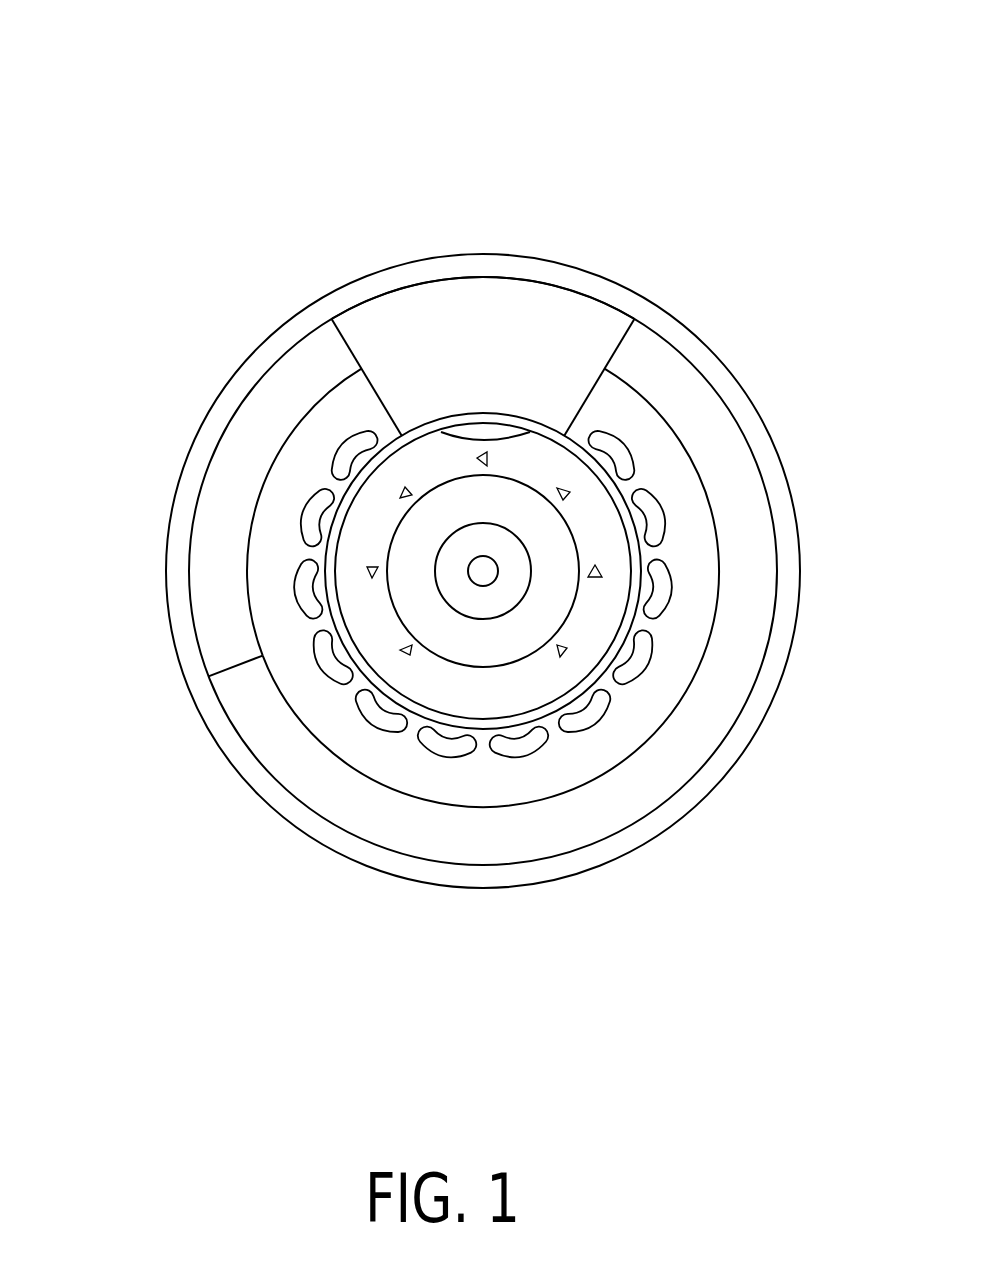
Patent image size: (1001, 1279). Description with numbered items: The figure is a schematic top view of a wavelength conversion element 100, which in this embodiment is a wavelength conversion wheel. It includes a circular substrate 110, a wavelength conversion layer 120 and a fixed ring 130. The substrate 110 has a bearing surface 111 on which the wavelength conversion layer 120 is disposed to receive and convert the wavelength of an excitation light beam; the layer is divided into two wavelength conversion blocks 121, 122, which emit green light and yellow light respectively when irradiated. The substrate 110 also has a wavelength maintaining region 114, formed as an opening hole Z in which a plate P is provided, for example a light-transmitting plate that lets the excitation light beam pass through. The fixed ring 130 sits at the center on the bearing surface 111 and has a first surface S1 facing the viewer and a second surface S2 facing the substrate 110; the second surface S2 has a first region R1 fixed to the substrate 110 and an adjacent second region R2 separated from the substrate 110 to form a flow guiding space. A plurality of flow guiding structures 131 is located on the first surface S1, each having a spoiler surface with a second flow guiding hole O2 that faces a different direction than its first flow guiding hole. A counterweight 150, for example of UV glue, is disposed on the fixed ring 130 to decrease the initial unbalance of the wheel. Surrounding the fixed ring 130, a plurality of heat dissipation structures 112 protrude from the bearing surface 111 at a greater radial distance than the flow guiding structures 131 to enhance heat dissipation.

The wavelength conversion element 100 is at (154, 34).
The substrate 110 is at (720, 357).
The bearing surface 111 is at (305, 478).
The heat dissipation structures 112 is at (350, 453).
The wavelength maintaining region 114 is at (483, 263).
The wavelength conversion layer 120 is at (777, 527).
The wavelength conversion block 121 is at (218, 639).
The wavelength conversion block 122 is at (247, 708).
The fixed ring 130 is at (848, 727).
The flow guiding structures 131 is at (567, 650).
The counterweight 150 is at (470, 430).
The opening hole Z is at (492, 276).
The plate P is at (532, 330).
The first surface S1 is at (600, 627).
The second surface S2 is at (497, 965).
The first region R1 is at (445, 660).
The second region R2 is at (480, 727).
The second flow guiding hole O2 is at (557, 657).